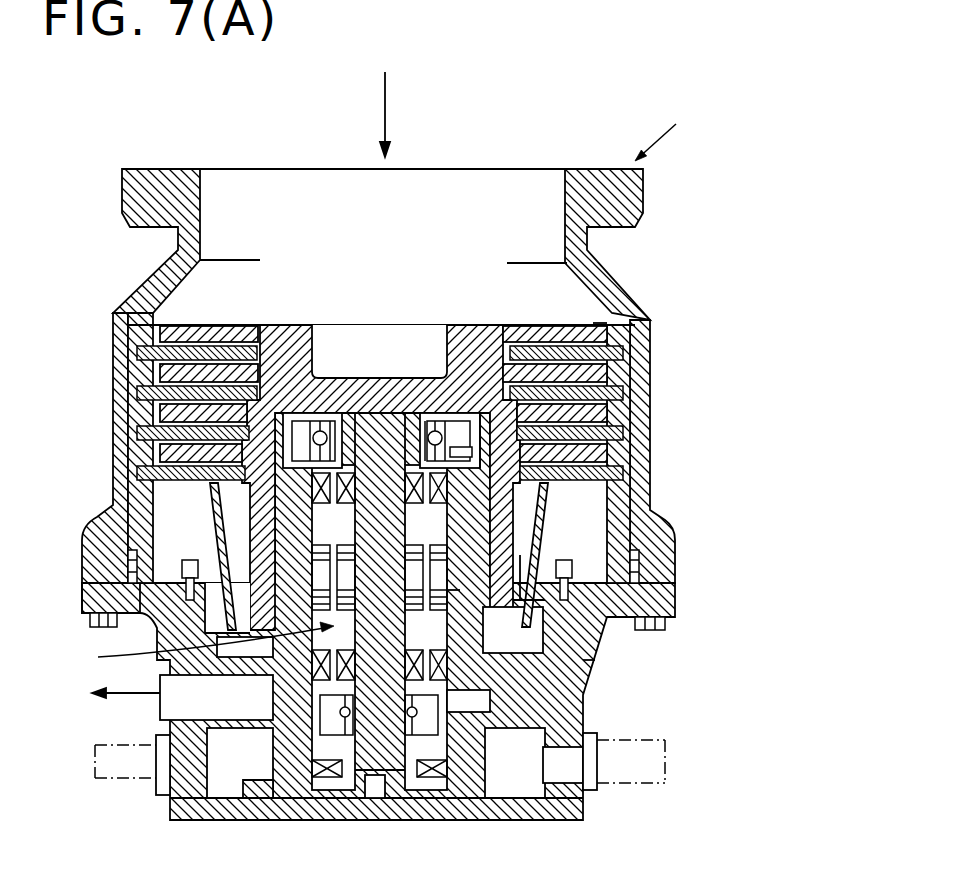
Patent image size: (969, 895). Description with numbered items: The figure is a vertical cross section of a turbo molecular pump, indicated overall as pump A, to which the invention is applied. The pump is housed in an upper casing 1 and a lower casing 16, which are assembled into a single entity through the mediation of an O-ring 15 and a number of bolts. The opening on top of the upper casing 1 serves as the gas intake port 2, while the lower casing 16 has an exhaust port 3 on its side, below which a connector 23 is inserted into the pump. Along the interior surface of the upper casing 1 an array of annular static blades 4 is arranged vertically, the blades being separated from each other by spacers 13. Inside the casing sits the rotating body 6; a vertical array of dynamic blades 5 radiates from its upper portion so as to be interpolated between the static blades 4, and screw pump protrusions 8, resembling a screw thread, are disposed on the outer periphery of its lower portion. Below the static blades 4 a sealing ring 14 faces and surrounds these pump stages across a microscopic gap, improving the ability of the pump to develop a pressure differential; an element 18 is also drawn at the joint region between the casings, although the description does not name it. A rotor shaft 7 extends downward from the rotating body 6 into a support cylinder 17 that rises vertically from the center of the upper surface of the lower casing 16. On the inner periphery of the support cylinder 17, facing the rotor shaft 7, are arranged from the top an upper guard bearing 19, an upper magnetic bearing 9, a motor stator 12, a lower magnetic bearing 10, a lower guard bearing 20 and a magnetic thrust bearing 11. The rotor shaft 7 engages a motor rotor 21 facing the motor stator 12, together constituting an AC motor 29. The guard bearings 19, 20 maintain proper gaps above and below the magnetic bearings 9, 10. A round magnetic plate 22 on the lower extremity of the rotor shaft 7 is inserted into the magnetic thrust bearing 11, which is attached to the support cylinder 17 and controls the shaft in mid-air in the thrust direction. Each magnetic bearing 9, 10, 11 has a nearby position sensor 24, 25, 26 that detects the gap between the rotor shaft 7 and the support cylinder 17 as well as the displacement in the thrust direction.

The upper casing 1 is at (651, 334).
The gas intake port 2 is at (485, 195).
The exhaust port 3 is at (195, 698).
The static blades 4 is at (628, 352).
The dynamic blades 5 is at (594, 322).
The rotating body 6 is at (292, 325).
The rotor shaft 7 is at (380, 483).
The screw pump protrusions 8 is at (200, 518).
The upper magnetic bearing 9 is at (403, 470).
The lower magnetic bearing 10 is at (515, 690).
The magnetic thrust bearing 11 is at (430, 770).
The motor stator 12 is at (212, 495).
The spacers 13 is at (625, 422).
The sealing ring 14 is at (553, 513).
The O-ring 15 is at (628, 575).
The lower casing 16 is at (603, 651).
The support cylinder 17 is at (549, 488).
The seal 18 is at (130, 553).
The upper guard bearing 19 is at (437, 413).
The lower guard bearing 20 is at (470, 755).
The motor rotor 21 is at (588, 668).
The round magnetic plate 22 is at (310, 760).
The connector 23 is at (585, 822).
The position sensor 24 is at (470, 413).
The position sensor 25 is at (450, 592).
The position sensor 26 is at (368, 800).
The AC motor 29 is at (197, 646).
The turbo molecular pump A is at (668, 128).